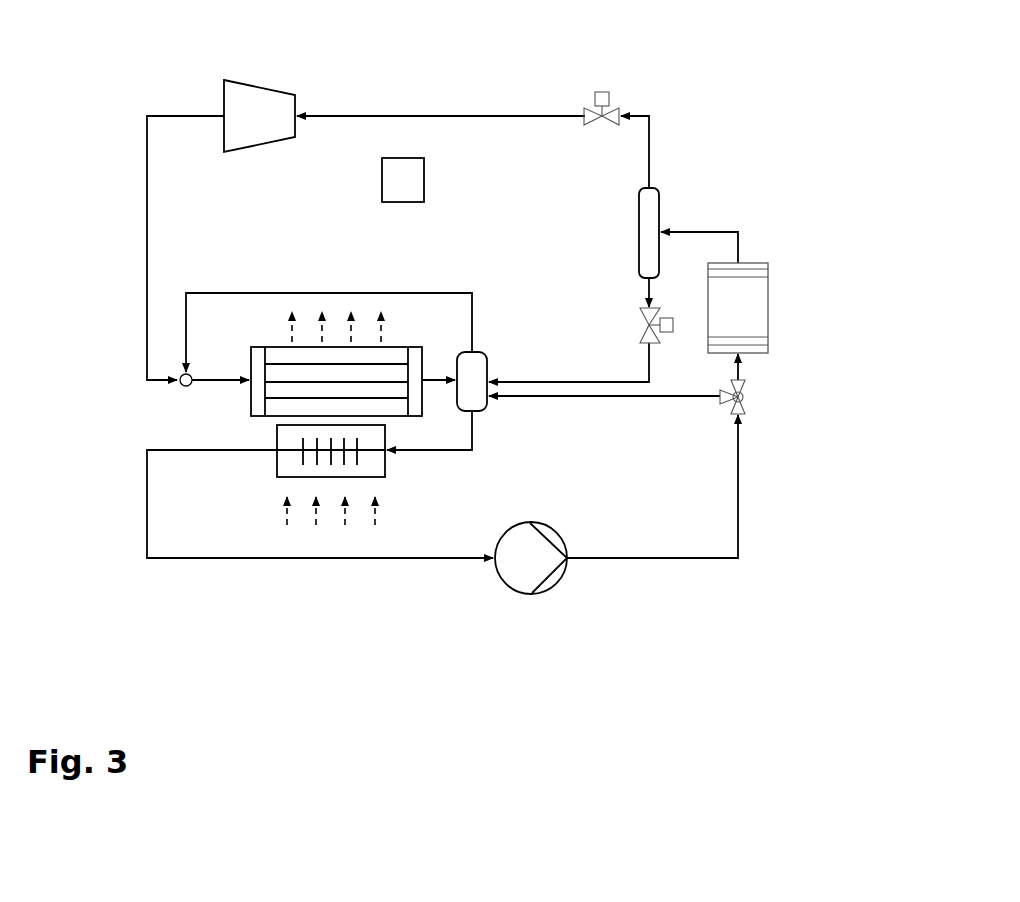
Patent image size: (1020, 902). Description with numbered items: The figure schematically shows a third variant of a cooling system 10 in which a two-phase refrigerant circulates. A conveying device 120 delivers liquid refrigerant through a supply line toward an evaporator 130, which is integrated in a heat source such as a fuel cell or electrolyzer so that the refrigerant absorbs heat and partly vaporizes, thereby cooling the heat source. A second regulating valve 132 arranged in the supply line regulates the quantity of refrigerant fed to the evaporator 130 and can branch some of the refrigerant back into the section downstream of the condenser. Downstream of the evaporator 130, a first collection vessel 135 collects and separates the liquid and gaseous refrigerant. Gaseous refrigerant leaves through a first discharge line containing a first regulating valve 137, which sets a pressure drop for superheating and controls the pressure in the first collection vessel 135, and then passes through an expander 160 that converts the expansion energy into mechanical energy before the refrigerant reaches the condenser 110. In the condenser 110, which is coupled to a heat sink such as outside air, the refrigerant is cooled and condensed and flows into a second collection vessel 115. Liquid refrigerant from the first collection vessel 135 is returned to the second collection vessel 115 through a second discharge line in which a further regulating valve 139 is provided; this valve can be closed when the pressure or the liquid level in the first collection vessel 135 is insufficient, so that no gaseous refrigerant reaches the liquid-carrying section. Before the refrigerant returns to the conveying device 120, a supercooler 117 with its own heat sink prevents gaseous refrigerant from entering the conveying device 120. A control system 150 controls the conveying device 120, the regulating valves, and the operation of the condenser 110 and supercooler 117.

The cooling system 10 is at (131, 29).
The condenser 110 is at (258, 375).
The second collection vessel 115 is at (473, 402).
The supercooler 117 is at (290, 465).
The conveying device 120 is at (522, 578).
The evaporator 130 is at (760, 307).
The second regulating valve 132 is at (752, 407).
The first collection vessel 135 is at (653, 212).
The first regulating valve 137 is at (618, 97).
The further regulating valve 139 is at (665, 313).
The control system 150 is at (393, 183).
The expander 160 is at (262, 92).